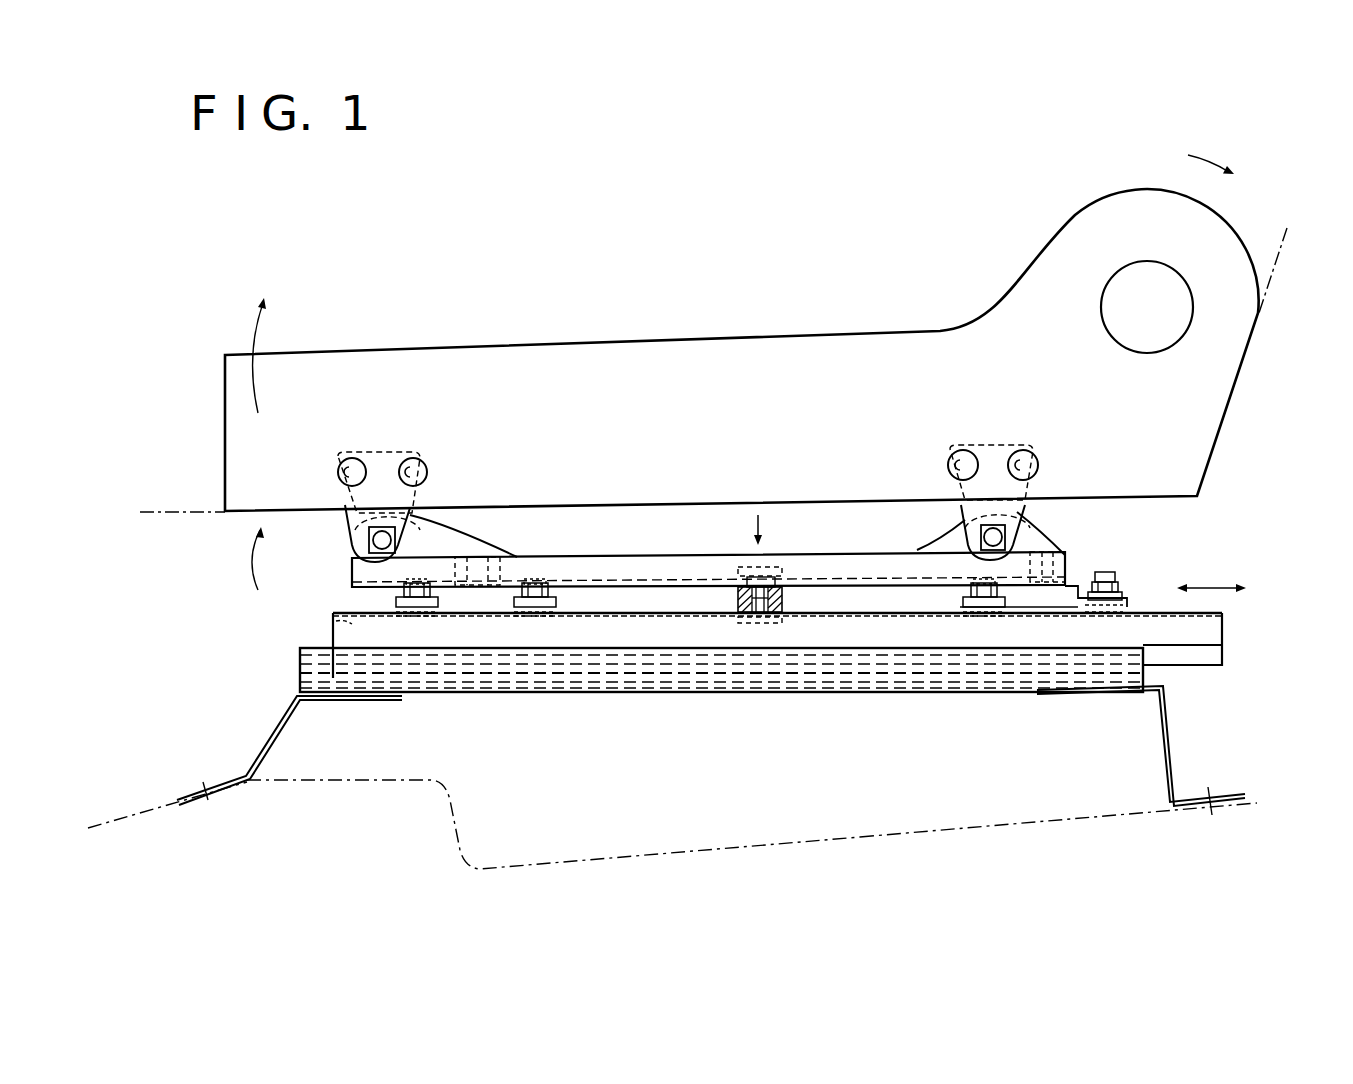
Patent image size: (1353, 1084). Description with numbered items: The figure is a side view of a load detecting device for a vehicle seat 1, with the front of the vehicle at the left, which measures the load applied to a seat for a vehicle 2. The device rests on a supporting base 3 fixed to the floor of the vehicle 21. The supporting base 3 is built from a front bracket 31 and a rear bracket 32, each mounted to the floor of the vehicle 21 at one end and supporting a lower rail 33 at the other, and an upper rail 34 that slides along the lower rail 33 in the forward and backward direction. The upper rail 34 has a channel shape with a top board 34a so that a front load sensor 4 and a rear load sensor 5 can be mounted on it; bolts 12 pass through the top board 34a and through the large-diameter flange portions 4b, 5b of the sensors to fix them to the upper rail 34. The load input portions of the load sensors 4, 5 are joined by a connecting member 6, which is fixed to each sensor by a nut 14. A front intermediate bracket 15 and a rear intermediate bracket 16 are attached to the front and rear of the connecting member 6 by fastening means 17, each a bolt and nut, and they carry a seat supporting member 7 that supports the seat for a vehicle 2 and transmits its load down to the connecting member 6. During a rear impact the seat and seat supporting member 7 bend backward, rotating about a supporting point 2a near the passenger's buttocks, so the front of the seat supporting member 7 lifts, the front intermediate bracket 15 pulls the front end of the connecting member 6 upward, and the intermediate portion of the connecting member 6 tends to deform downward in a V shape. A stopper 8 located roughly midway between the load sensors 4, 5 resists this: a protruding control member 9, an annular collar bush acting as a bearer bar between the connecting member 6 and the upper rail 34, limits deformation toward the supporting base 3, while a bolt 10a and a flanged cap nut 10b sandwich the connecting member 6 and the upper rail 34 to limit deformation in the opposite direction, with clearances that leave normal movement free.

The load detecting device for a vehicle seat 1 is at (383, 254).
The seat for a vehicle 2 is at (198, 514).
The supporting point 2a is at (1092, 276).
The supporting base 3 is at (330, 809).
The front load sensor 4 is at (480, 603).
The flange portion 4b is at (396, 606).
The rear load sensor 5 is at (1035, 600).
The flange portion 5b is at (962, 603).
The connecting member 6 is at (628, 565).
The seat supporting member 7 is at (540, 358).
The stopper 8 is at (780, 545).
The protruding control member 9 is at (784, 600).
The bolt 10a is at (785, 620).
The nut 10b is at (785, 566).
The bolt 12 is at (978, 576).
The nut 14 is at (503, 562).
The front intermediate bracket 15 is at (430, 505).
The rear intermediate bracket 16 is at (960, 512).
The fastening means 17 is at (350, 513).
The floor of the vehicle 21 is at (885, 835).
The front bracket 31 is at (277, 742).
The rear bracket 32 is at (1167, 762).
The lower rail 33 is at (300, 678).
The upper rail 34 is at (1215, 627).
The top board 34a is at (333, 625).